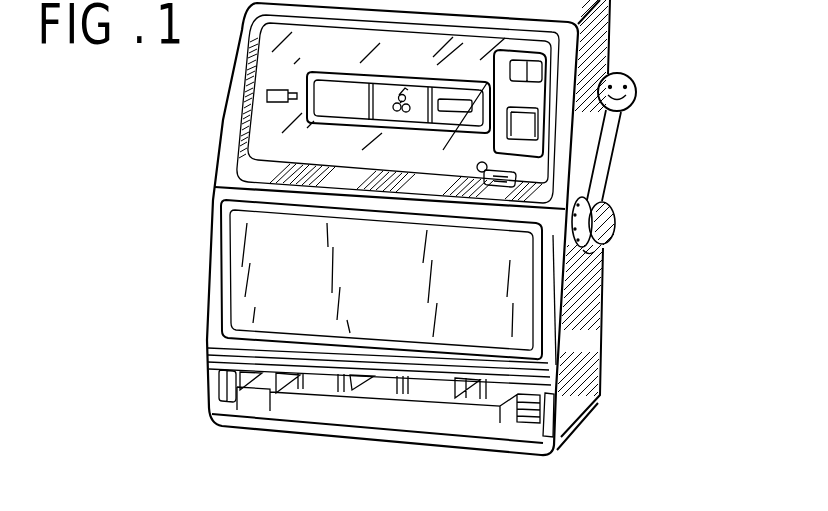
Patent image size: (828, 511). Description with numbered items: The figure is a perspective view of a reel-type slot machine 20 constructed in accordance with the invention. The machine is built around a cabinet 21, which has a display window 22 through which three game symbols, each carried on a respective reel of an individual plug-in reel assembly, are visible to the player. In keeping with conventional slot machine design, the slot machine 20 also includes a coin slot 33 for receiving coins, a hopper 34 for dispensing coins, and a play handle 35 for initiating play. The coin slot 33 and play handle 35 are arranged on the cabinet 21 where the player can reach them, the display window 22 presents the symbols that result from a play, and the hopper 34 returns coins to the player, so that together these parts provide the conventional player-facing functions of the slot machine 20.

The reel-type slot machine 20 is at (200, 73).
The cabinet 21 is at (212, 278).
The display window 22 is at (357, 113).
The coin slot 33 is at (497, 190).
The hopper 34 is at (413, 400).
The play handle 35 is at (606, 227).